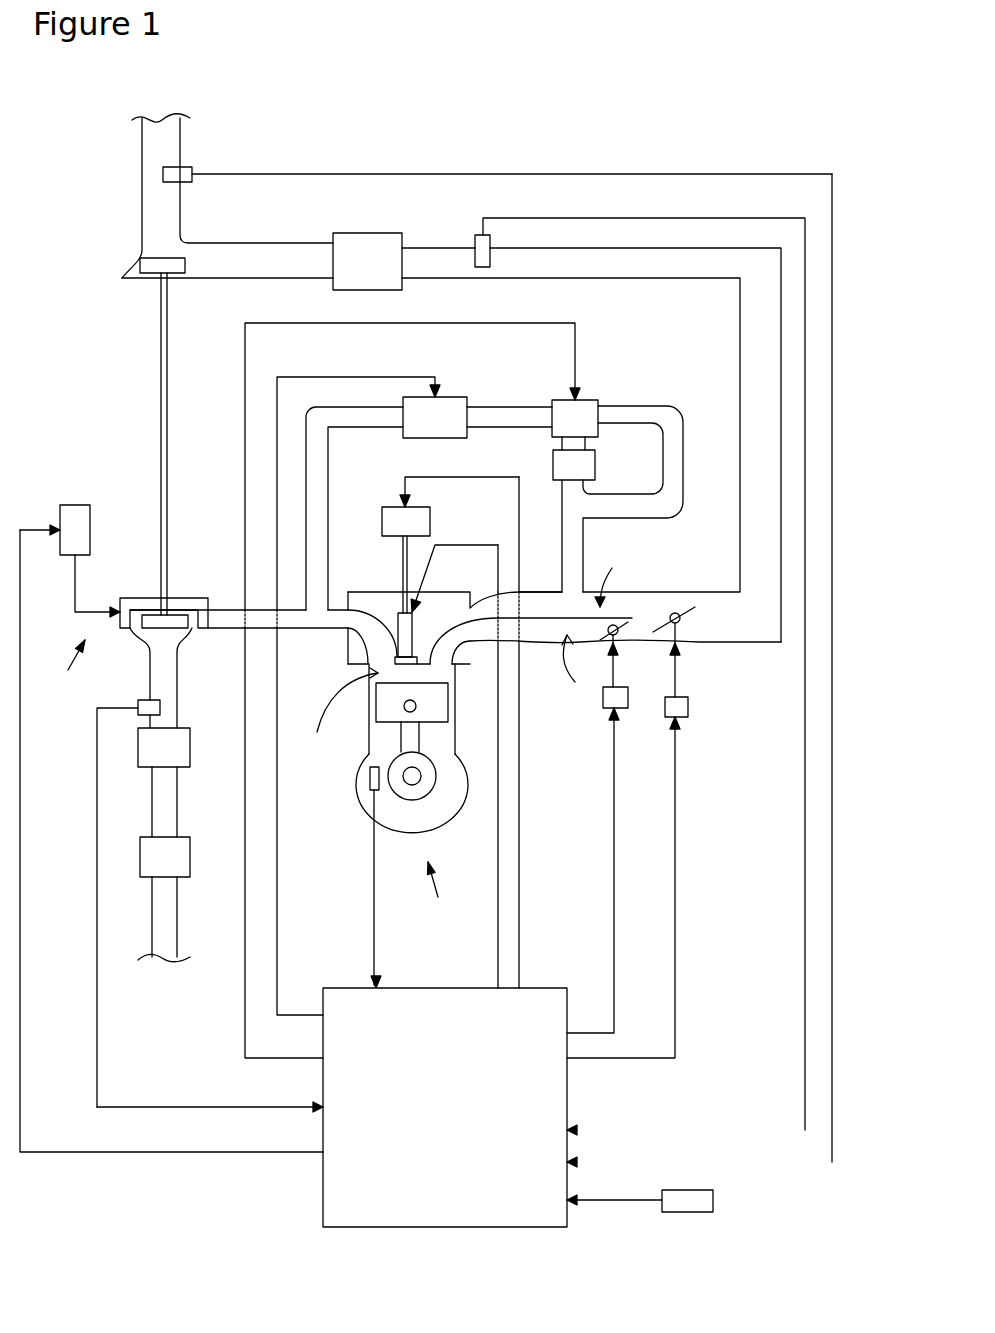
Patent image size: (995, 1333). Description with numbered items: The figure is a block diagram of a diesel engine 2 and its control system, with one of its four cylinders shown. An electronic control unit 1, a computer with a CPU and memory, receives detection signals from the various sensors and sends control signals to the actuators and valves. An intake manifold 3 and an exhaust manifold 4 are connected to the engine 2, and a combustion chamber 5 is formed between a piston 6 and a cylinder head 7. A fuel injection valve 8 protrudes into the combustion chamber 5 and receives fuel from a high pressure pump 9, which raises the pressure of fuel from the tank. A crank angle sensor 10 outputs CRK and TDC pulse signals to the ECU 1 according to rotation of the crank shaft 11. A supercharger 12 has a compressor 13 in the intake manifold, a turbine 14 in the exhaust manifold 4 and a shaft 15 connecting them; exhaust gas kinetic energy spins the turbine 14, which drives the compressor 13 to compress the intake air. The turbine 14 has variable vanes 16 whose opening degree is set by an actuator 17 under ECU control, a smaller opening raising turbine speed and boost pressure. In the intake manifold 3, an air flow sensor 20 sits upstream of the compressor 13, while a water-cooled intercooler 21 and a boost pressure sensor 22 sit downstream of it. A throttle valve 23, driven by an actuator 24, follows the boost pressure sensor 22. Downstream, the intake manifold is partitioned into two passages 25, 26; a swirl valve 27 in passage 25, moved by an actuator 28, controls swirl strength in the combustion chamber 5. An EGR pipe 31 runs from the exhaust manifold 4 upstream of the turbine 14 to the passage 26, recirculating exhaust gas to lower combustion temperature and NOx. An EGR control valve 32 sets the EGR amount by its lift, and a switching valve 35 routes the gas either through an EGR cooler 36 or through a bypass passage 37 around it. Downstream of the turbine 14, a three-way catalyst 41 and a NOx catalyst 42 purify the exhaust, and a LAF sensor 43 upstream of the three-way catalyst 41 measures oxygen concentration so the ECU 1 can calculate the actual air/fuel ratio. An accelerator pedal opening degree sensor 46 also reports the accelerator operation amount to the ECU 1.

The electronic control unit 1 is at (477, 1227).
The engine 2 is at (412, 786).
The intake manifold 3 is at (735, 642).
The exhaust manifold 4 is at (287, 630).
The combustion chamber 5 is at (342, 710).
The piston 6 is at (385, 708).
The cylinder head 7 is at (352, 653).
The fuel injection valve 8 is at (405, 612).
The high pressure pump 9 is at (430, 522).
The crank angle sensor 10 is at (370, 777).
The crank shaft 11 is at (420, 790).
The supercharger 12 is at (61, 661).
The compressor 13 is at (163, 258).
The turbine 14 is at (175, 617).
The shaft 15 is at (163, 388).
The variable vanes 16 is at (123, 605).
The actuator 17 is at (75, 503).
The air flow sensor 20 is at (188, 167).
The intercooler 21 is at (352, 233).
The boost pressure sensor 22 is at (485, 267).
The throttle valve 23 is at (675, 612).
The actuator 24 is at (688, 705).
The passage 25 is at (582, 671).
The passage 26 is at (614, 577).
The swirl valve 27 is at (615, 622).
The actuator 28 is at (628, 697).
The EGR pipe 31 is at (330, 513).
The EGR control valve 32 is at (453, 398).
The switching valve 35 is at (595, 400).
The EGR cooler 36 is at (593, 465).
The bypass passage 37 is at (685, 462).
The three-way catalyst 41 is at (190, 747).
The NOx catalyst 42 is at (190, 855).
The LAF sensor 43 is at (145, 702).
The accelerator pedal opening degree sensor 46 is at (715, 1200).